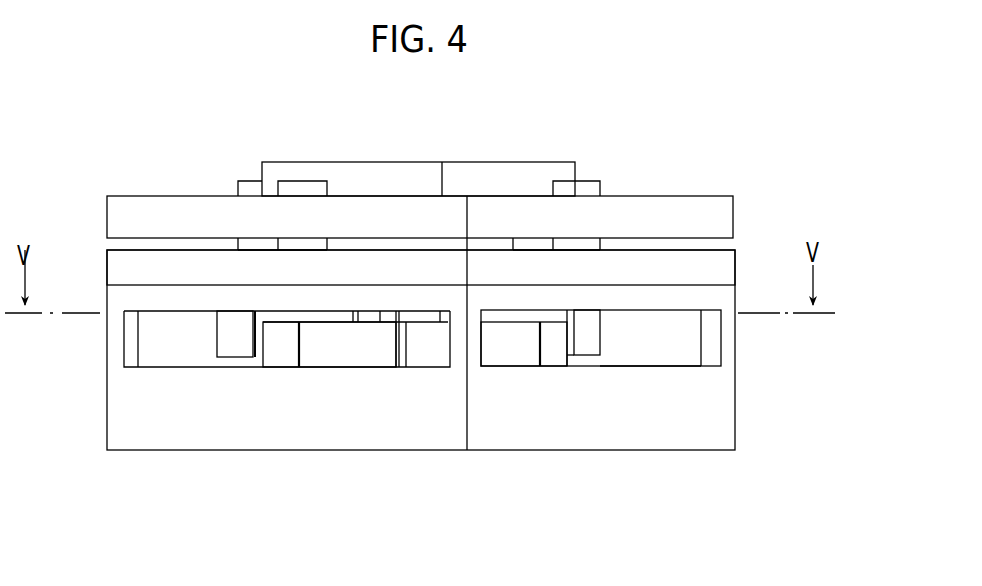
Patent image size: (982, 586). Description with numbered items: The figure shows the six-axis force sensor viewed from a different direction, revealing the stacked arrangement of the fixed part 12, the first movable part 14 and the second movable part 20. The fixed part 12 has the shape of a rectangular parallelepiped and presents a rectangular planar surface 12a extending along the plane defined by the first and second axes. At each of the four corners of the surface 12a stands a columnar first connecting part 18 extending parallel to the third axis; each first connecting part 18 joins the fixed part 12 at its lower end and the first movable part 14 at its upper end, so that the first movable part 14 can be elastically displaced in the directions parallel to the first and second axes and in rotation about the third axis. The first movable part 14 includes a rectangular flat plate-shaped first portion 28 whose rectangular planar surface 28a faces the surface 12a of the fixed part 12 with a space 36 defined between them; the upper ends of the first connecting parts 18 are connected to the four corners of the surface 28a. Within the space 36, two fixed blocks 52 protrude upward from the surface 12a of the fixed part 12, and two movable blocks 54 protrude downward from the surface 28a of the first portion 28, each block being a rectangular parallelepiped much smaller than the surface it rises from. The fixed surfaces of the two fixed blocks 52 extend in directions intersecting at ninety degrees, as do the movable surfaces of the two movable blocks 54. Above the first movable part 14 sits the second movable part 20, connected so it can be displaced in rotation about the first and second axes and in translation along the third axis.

The fixed part 12 is at (198, 456).
The rectangular planar surface 12a is at (188, 367).
The first movable part 14 is at (744, 257).
The first connecting part 18 is at (729, 343).
The second movable part 20 is at (514, 151).
The first portion 28 is at (142, 298).
The rectangular planar surface 28a is at (165, 312).
The space 36 is at (647, 353).
The fixed block 52 is at (345, 350).
The movable block 54 is at (247, 323).